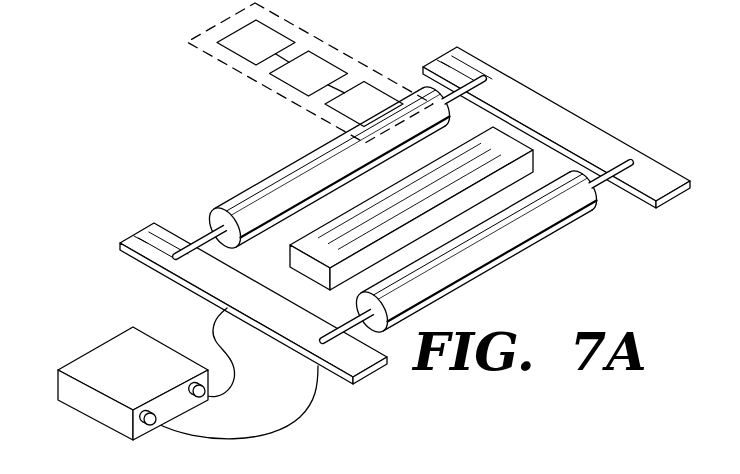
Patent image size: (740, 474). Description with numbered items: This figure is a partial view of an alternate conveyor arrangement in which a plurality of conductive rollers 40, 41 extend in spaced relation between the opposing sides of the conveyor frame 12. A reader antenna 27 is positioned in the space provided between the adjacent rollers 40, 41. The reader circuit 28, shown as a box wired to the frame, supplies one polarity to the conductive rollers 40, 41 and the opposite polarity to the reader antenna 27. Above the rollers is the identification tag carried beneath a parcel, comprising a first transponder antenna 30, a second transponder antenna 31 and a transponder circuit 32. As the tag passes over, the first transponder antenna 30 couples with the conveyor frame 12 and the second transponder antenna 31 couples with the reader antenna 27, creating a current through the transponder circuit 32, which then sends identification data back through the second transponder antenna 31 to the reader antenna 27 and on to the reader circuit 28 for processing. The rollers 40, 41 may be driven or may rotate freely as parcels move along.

The conveyor frame 12 is at (667, 173).
The reader antenna 27 is at (500, 148).
The reader circuit 28 is at (112, 352).
The first transponder antenna 30 is at (235, 45).
The second transponder antenna 31 is at (330, 107).
The transponder circuit 32 is at (313, 65).
The conductive roller 40 is at (278, 193).
The conductive roller 41 is at (547, 228).